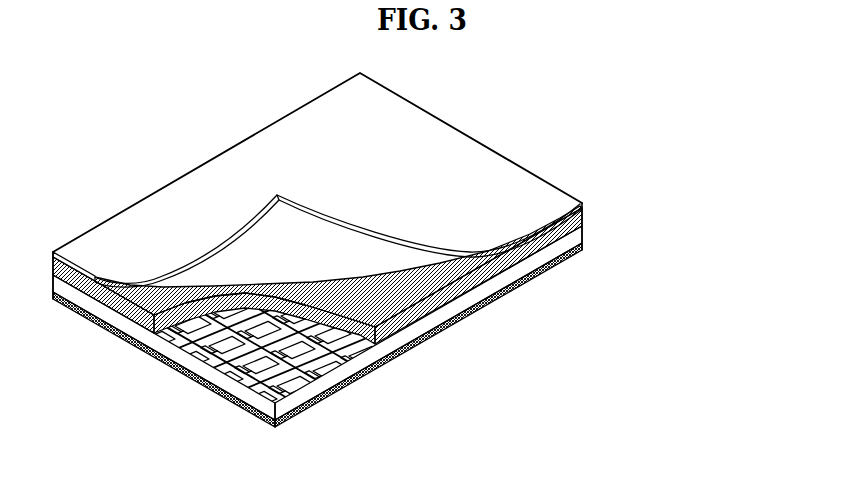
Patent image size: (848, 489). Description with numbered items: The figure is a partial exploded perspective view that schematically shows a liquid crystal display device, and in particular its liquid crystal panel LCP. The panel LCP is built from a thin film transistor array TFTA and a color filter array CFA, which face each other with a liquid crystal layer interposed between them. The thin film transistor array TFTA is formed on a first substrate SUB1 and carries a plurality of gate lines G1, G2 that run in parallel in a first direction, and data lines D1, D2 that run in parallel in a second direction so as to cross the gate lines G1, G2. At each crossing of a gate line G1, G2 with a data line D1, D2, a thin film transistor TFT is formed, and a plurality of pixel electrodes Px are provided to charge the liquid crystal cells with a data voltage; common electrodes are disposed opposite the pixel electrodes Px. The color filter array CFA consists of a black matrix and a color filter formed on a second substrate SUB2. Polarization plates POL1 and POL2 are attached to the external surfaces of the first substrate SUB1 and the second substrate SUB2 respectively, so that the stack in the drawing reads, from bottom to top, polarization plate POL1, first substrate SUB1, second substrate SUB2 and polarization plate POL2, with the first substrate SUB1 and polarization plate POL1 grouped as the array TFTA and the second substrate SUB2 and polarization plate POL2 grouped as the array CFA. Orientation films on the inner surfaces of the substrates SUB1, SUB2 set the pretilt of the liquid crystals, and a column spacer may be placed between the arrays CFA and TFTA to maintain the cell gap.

The polarization plate POL2 is at (584, 204).
The second substrate SUB2 is at (584, 214).
The first substrate SUB1 is at (584, 231).
The polarization plate POL1 is at (584, 248).
The color filter array CFA is at (387, 208).
The thin film transistor array TFTA is at (392, 326).
The liquid crystal panel LCP is at (417, 261).
The thin film transistor TFT is at (183, 352).
The data line D1 is at (248, 388).
The data line D2 is at (212, 368).
The gate line G1 is at (330, 388).
The gate line G2 is at (370, 375).
The pixel electrode Px is at (268, 384).